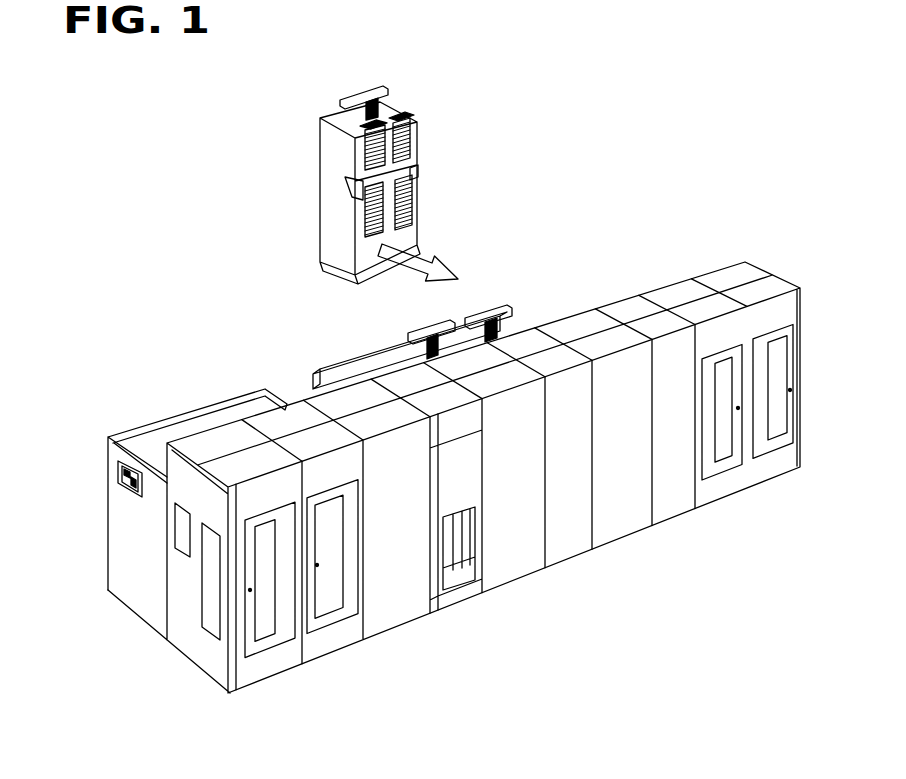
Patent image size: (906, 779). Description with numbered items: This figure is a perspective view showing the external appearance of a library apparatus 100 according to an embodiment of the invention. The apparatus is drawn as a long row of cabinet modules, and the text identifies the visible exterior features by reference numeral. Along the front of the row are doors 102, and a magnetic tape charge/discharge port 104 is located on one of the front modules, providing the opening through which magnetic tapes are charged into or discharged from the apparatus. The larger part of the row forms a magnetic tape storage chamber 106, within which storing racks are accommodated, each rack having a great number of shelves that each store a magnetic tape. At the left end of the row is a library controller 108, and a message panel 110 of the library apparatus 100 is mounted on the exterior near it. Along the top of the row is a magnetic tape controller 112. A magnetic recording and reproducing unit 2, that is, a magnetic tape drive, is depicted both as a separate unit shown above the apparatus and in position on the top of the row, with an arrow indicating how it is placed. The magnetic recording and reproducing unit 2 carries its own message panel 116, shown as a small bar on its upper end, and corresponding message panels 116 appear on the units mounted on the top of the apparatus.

The library apparatus 100 is at (72, 577).
The doors 102 is at (282, 643).
The magnetic tape charge/discharge port 104 is at (458, 572).
The magnetic tape storage chamber 106 is at (573, 536).
The library controller 108 is at (174, 421).
The message panel of the library apparatus 110 is at (117, 470).
The magnetic tape controller 112 is at (332, 374).
The magnetic recording and reproducing unit 2 is at (418, 228).
The message panel of the magnetic recording and reproducing unit 116 is at (386, 90).